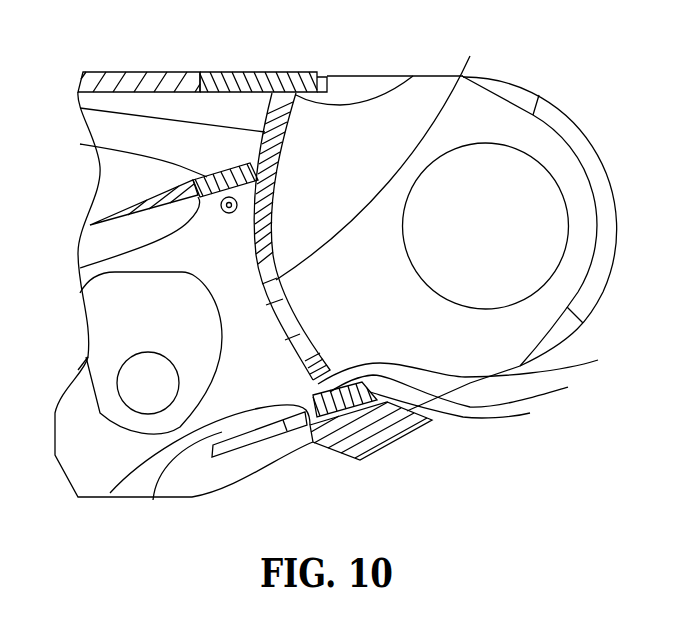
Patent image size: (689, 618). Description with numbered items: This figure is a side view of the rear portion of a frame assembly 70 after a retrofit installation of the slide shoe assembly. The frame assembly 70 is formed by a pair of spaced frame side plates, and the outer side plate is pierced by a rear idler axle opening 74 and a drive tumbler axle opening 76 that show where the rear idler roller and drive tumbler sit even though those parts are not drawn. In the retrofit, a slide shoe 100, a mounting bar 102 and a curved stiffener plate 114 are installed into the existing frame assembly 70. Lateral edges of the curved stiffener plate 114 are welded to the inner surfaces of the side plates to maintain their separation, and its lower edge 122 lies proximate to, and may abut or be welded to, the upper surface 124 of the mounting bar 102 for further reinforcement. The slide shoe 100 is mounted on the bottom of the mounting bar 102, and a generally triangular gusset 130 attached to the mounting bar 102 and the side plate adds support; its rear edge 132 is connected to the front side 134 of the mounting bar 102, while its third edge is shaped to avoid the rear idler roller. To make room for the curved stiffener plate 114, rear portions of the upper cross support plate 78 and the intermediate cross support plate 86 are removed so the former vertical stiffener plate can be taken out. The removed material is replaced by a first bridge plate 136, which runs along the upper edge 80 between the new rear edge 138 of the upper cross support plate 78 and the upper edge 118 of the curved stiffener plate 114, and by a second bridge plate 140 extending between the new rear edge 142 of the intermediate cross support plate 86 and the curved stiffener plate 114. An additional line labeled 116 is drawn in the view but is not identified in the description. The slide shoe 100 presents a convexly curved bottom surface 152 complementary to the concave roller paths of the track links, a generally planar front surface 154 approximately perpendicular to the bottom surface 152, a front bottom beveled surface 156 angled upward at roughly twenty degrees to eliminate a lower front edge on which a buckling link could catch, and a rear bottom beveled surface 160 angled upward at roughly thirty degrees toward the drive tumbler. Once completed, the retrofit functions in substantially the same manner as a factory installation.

The frame assembly 70 is at (589, 82).
The rear idler axle opening 74 is at (117, 384).
The drive tumbler axle opening 76 is at (569, 227).
The upper cross support plate 78 is at (113, 72).
The upper edge 80 is at (370, 76).
The intermediate cross support plate 86 is at (98, 193).
The slide shoe 100 is at (425, 420).
The mounting bar 102 is at (530, 413).
The curved stiffener plate 114 is at (80, 108).
The axis line 116 is at (470, 56).
The upper edge 118 is at (413, 76).
The lower edge 122 is at (598, 360).
The upper surface 124 is at (568, 387).
The gusset 130 is at (237, 447).
The rear edge 132 is at (153, 500).
The front side 134 is at (110, 493).
The first bridge plate 136 is at (278, 72).
The new rear edge 138 is at (207, 72).
The second bridge plate 140 is at (80, 144).
The new rear edge 142 is at (80, 268).
The bottom surface 152 is at (380, 457).
The front surface 154 is at (310, 443).
The front bottom beveled surface 156 is at (337, 460).
The rear bottom beveled surface 160 is at (418, 430).